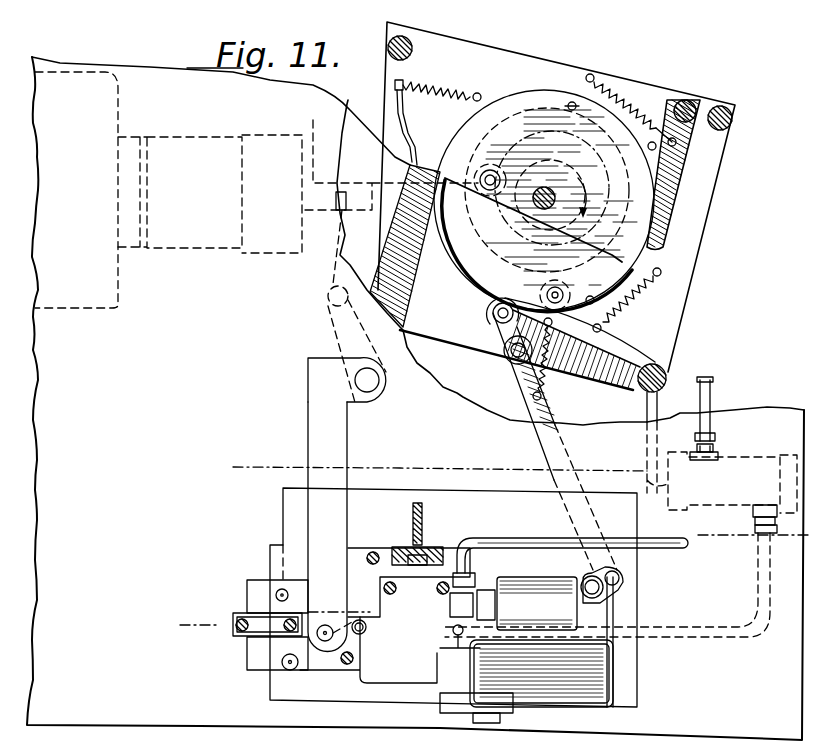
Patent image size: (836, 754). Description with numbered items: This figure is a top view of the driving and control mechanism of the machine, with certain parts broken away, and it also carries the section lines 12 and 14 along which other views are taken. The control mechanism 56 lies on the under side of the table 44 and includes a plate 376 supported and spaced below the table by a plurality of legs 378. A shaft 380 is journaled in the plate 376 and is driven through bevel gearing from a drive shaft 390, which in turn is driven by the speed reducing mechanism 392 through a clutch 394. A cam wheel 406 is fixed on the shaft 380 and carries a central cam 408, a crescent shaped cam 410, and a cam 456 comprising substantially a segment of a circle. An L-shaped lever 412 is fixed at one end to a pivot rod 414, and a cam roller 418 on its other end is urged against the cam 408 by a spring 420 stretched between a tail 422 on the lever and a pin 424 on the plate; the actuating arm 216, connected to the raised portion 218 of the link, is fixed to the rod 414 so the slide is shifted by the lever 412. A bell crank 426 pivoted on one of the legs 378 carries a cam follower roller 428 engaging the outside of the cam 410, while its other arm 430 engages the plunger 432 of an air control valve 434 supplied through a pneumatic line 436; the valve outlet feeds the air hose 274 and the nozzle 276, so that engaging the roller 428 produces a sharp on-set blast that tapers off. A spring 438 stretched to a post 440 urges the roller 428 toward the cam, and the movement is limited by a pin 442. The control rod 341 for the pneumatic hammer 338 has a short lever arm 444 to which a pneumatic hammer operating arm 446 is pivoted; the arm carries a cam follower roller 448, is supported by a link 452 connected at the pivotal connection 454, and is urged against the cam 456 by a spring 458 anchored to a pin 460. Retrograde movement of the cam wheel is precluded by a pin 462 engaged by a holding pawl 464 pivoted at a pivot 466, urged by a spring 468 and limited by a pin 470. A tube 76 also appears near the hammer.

The section line 12— 12 is at (269, 440).
The section line 14— 14 is at (202, 603).
The table 44 is at (148, 454).
The control mechanism 56 is at (308, 317).
The tube 76 is at (448, 542).
The actuating arm 216 is at (320, 402).
The raised portion of the link 218 is at (352, 624).
The air hose 274 is at (733, 640).
The nozzle 276 is at (427, 657).
The pneumatic hammer 338 is at (640, 693).
The control rod 341 is at (585, 592).
The plate 376 is at (640, 265).
The legs 378 is at (700, 330).
The shaft 380 is at (554, 180).
The drive shaft 390 is at (313, 120).
The speed reducing mechanism 392 is at (88, 76).
The clutch 394 is at (188, 136).
The cam wheel 406 is at (518, 97).
The central cam 408 is at (605, 218).
The crescent shaped cam 410 is at (566, 100).
The L-shaped lever 412 is at (412, 165).
The pivot rod 414 is at (360, 378).
The cam roller 418 is at (462, 130).
The spring 420 is at (445, 80).
The tail 422 is at (393, 90).
The pin 424 is at (478, 93).
The bell crank 426 is at (613, 330).
The cam follower roller 428 is at (542, 288).
The arm of the lever 430 is at (672, 392).
The plunger 432 is at (724, 492).
The air control valve 434 is at (784, 436).
The pneumatic line 436 is at (712, 383).
The spring 438 is at (668, 252).
The post 440 is at (662, 273).
The pin 442 is at (588, 295).
The lever arm 444 is at (624, 597).
The pneumatic hammer operating arm 446 is at (540, 413).
The cam follower roller 448 is at (490, 313).
The link 452 is at (520, 363).
The pivotal connection 454 is at (507, 352).
The cam 456 is at (568, 253).
The spring 458 is at (540, 378).
The pin 460 is at (537, 245).
The pin 462 is at (604, 82).
The holding pawl 464 is at (718, 163).
The pivot 466 is at (695, 97).
The spring 468 is at (646, 100).
The pin 470 is at (728, 136).